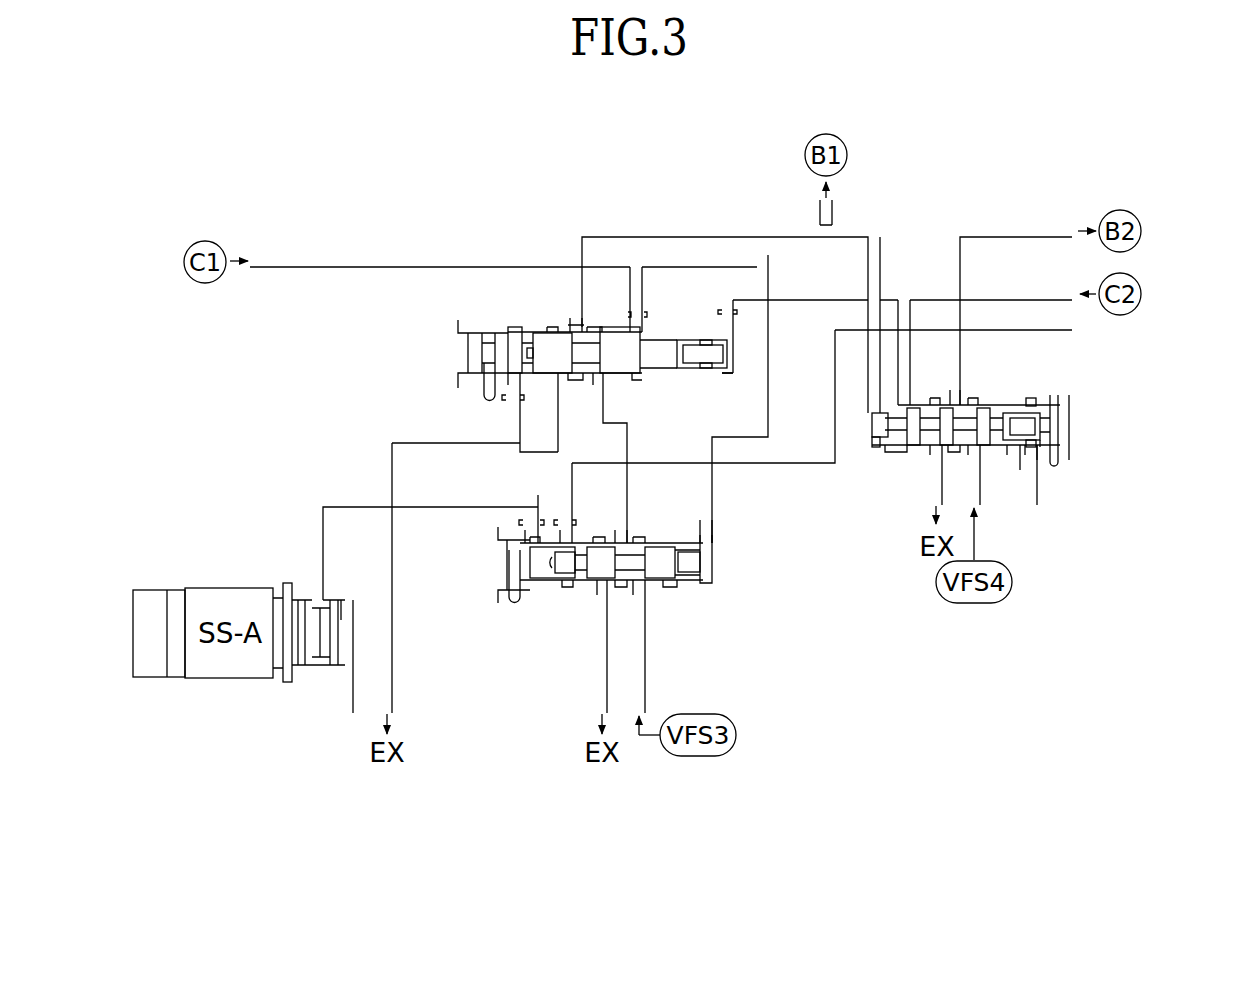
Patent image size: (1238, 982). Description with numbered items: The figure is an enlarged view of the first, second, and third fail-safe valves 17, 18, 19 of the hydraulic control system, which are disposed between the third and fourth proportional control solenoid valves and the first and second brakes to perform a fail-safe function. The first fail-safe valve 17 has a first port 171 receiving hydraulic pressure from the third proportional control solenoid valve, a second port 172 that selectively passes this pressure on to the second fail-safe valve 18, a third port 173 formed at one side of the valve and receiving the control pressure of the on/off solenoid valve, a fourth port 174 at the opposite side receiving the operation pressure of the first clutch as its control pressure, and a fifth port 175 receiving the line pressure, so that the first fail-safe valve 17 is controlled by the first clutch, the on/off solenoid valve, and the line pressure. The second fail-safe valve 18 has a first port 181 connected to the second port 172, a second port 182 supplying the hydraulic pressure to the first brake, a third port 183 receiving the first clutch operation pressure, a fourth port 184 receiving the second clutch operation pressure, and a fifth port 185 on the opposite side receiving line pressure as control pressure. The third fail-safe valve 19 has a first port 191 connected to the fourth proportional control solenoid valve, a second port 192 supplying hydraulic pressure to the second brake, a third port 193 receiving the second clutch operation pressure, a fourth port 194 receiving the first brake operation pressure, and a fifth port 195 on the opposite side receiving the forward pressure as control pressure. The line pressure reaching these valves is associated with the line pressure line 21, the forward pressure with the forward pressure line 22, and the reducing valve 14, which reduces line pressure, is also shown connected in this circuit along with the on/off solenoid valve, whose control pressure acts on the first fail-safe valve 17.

The reducing valve 14 is at (348, 716).
The first fail-safe valve 17 is at (718, 565).
The second fail-safe valve 18 is at (447, 356).
The third fail-safe valve 19 is at (1078, 425).
The line pressure line 21 is at (1080, 323).
The forward pressure line 22 is at (1031, 508).
The first port 171 is at (638, 594).
The second port 172 is at (622, 536).
The third port 173 is at (536, 533).
The fourth port 174 is at (706, 546).
The fifth port 175 is at (564, 536).
The first port 181 is at (598, 389).
The second port 182 is at (573, 327).
The third port 183 is at (637, 328).
The fourth port 184 is at (727, 332).
The fifth port 185 is at (513, 379).
The first port 191 is at (976, 452).
The second port 192 is at (956, 402).
The third port 193 is at (904, 402).
The fourth port 194 is at (869, 405).
The fifth port 195 is at (1035, 454).